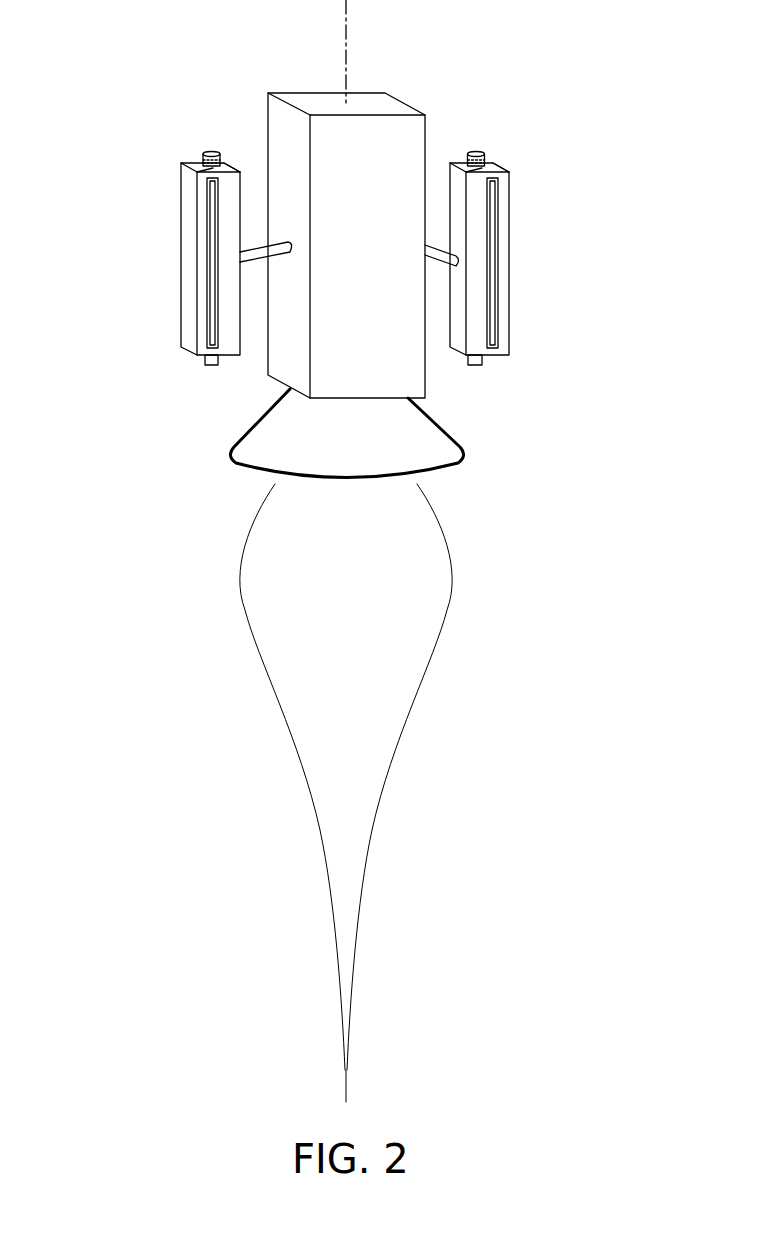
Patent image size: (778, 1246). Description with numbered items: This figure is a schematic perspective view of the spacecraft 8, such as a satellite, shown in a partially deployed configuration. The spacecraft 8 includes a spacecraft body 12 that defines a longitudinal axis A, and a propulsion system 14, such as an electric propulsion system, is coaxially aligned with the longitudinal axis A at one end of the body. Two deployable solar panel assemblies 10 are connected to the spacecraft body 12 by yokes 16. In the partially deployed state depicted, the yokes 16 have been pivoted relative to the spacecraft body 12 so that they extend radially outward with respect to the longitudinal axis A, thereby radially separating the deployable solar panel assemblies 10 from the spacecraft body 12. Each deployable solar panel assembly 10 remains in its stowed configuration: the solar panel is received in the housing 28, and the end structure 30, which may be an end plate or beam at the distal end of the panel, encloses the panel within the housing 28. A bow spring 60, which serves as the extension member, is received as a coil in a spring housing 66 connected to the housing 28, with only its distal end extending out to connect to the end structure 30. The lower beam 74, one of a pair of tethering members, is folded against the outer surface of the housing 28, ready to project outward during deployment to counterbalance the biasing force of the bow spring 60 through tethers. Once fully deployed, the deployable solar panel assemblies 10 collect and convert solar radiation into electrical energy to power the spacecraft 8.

The longitudinal axis A is at (347, 27).
The spacecraft 8 is at (487, 91).
The deployable solar panel assembly 10 is at (158, 222).
The spacecraft body 12 is at (400, 101).
The propulsion system 14 is at (458, 443).
The yoke 16 is at (283, 255).
The housing 28 is at (225, 164).
The end structure 30 is at (188, 268).
The bow spring 60 is at (202, 165).
The spring housing 66 is at (208, 150).
The lower beam 74 is at (207, 323).